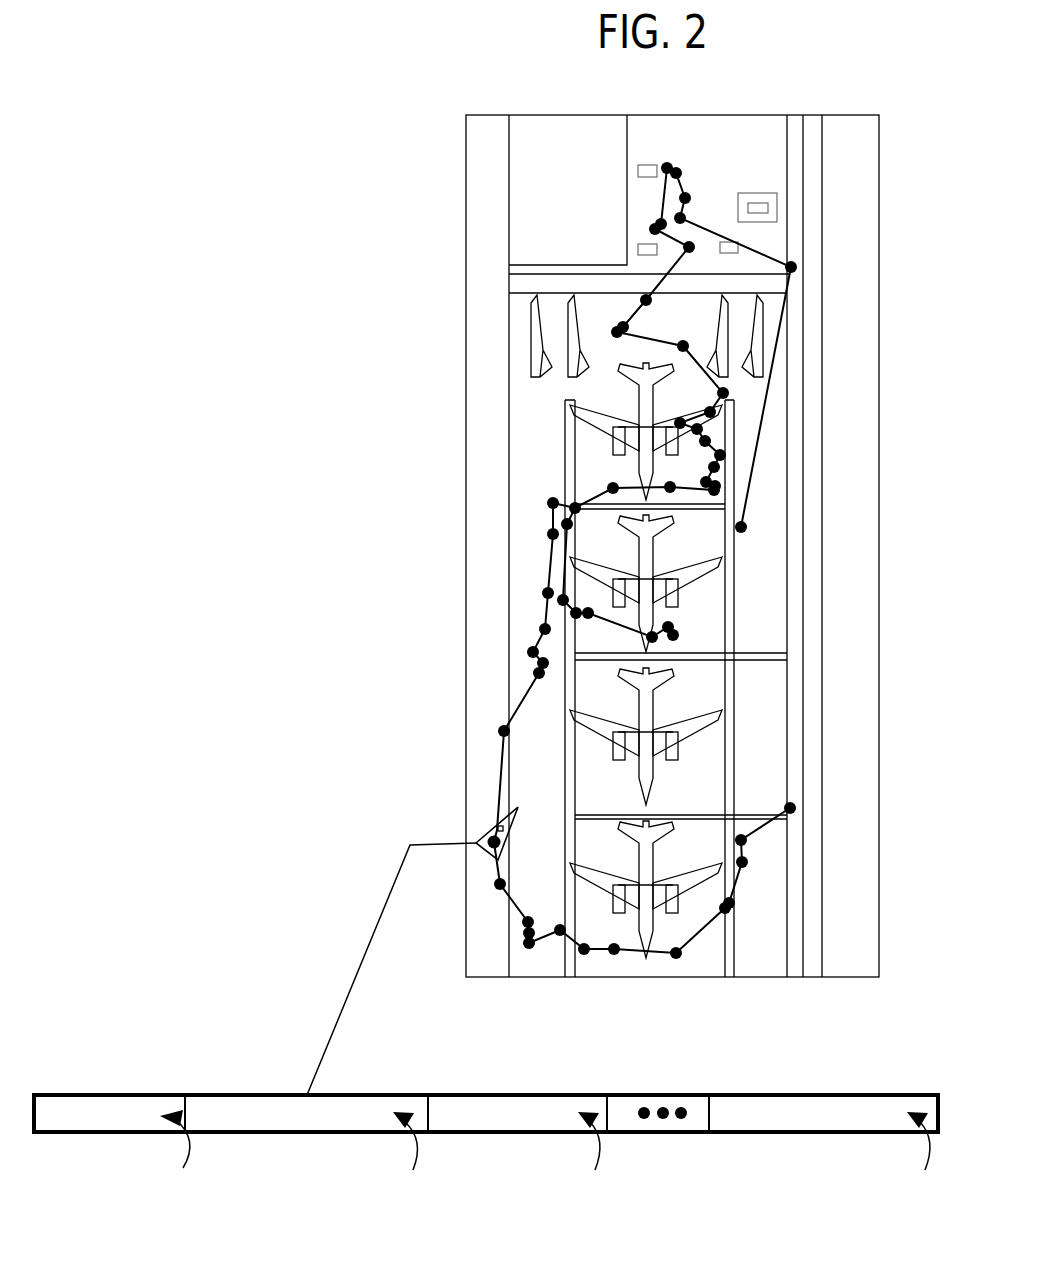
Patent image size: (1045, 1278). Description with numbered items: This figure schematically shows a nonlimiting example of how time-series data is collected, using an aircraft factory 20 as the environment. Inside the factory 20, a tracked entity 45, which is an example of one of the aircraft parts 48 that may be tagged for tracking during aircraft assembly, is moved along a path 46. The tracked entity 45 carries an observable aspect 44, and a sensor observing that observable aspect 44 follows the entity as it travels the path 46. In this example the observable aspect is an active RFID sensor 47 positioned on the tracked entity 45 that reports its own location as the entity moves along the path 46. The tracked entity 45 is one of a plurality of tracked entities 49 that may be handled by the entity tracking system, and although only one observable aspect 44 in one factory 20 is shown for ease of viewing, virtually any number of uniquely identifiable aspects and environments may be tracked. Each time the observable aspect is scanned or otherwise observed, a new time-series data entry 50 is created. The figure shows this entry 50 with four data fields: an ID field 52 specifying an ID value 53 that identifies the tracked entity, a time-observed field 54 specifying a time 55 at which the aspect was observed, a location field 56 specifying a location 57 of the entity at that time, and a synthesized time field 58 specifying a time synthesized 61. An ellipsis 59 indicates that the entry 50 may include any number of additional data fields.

The aircraft factory 20 is at (472, 90).
The observable aspect 44 is at (491, 836).
The tracked entity 45 is at (514, 812).
The path 46 is at (500, 778).
The active RFID sensor 47 is at (494, 826).
The aircraft parts 48 is at (532, 330).
The plurality of tracked entities 49 is at (538, 283).
The time-series data entry 50 is at (124, 1010).
The ID field 52 is at (124, 1093).
The ID value 53 is at (175, 1151).
The time-observed field 54 is at (300, 1093).
The time 55 is at (406, 1153).
The location field 56 is at (540, 1093).
The location 57 is at (587, 1153).
The synthesized time field 58 is at (858, 1093).
The ellipsis 59 is at (662, 1104).
The time synthesized 61 is at (916, 1153).